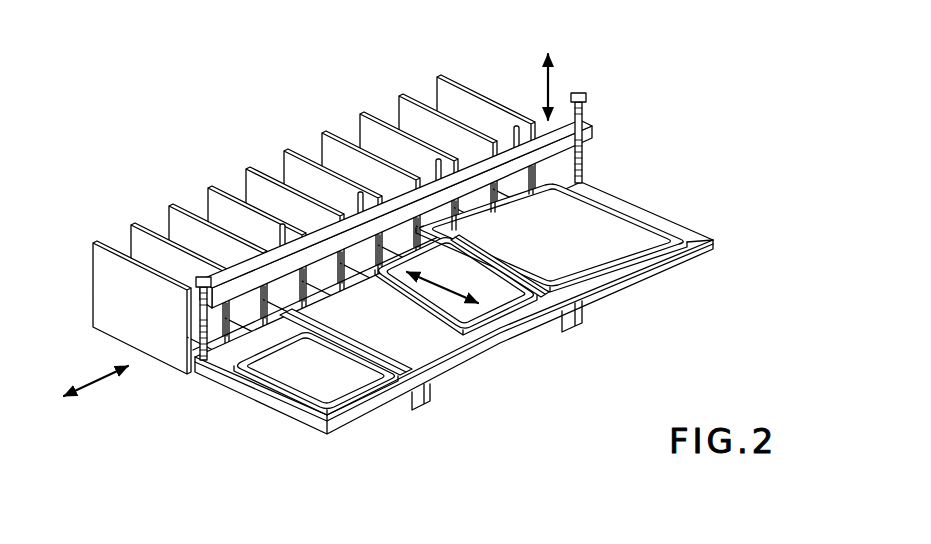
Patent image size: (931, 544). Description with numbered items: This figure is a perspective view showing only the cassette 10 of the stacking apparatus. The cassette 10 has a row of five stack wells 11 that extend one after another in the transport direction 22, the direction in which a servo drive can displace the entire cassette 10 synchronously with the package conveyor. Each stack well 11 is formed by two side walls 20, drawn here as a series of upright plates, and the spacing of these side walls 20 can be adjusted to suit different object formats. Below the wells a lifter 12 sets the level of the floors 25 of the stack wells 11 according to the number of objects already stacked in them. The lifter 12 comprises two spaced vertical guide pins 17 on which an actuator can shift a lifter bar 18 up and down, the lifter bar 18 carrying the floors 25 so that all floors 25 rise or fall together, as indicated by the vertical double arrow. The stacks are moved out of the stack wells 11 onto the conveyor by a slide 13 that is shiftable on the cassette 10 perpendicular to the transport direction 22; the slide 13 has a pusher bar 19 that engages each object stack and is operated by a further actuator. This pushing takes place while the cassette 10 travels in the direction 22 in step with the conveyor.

The cassette 10 is at (700, 154).
The stack well 11 is at (163, 230).
The lifter 12 is at (600, 117).
The slide 13 is at (443, 345).
The guide pins 17 is at (193, 368).
The lifter bar 18 is at (335, 262).
The pusher bar 19 is at (520, 138).
The side walls 20 is at (260, 205).
The transport direction 22 is at (96, 397).
The floors 25 is at (240, 328).